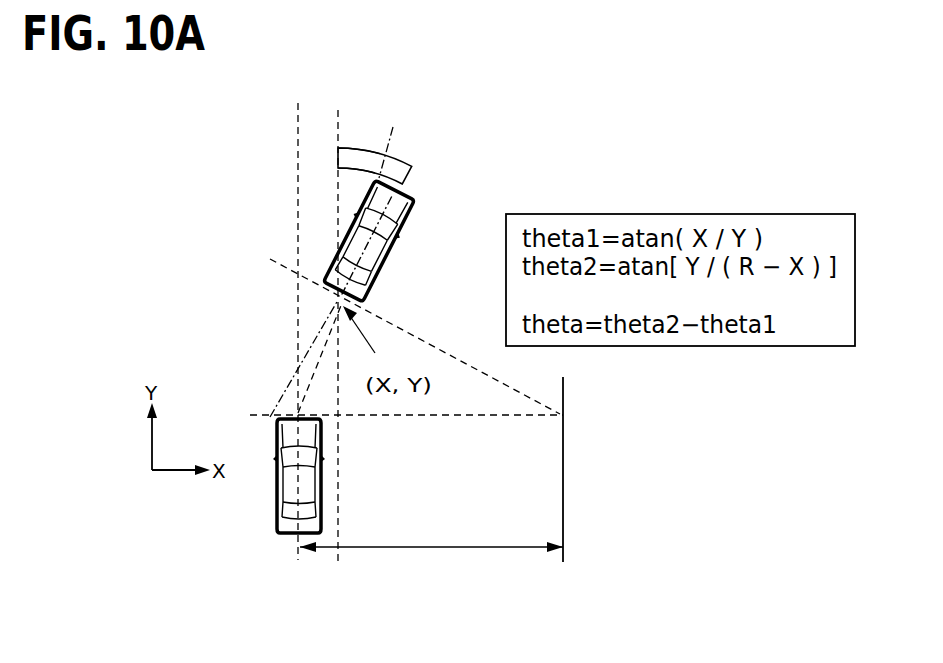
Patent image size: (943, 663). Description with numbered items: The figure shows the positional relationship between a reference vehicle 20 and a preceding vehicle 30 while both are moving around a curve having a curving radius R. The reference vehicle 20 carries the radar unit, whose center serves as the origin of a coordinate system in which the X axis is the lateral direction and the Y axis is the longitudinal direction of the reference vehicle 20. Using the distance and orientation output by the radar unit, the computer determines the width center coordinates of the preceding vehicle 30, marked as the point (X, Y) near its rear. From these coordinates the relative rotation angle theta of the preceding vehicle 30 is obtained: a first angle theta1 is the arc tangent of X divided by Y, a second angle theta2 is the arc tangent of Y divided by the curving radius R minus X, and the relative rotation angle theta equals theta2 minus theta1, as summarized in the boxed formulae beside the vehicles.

The reference vehicle 20 is at (312, 500).
The preceding vehicle 30 is at (388, 242).
The curving radius R is at (431, 535).
The relative rotation angle theta is at (430, 150).
The angle theta1 is at (281, 195).
The angle theta2 is at (395, 104).